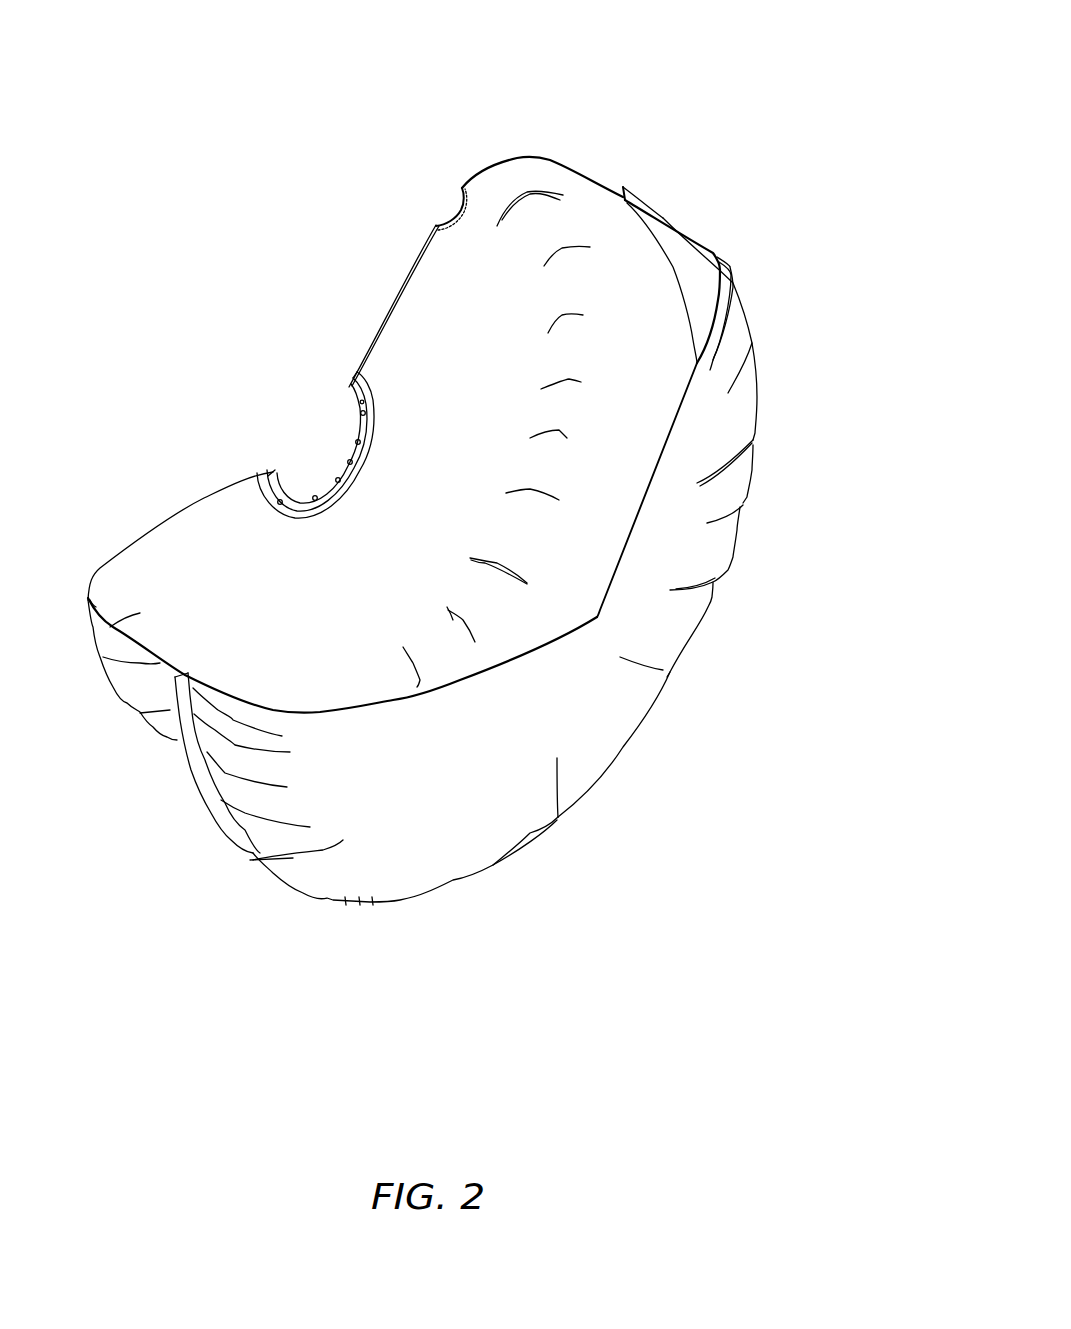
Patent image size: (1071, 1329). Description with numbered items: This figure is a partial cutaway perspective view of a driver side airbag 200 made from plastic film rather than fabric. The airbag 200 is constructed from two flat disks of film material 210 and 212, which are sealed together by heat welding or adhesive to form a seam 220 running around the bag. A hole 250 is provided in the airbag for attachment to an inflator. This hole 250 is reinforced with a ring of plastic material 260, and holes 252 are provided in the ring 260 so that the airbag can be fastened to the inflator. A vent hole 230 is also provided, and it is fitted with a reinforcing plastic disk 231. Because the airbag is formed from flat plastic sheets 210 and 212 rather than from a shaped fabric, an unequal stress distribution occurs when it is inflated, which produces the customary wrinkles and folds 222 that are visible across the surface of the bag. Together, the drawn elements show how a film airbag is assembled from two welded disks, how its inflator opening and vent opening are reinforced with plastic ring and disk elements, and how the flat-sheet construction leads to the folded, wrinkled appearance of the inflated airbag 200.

The driver side airbag 200 is at (648, 737).
The flat disk of film material 210 is at (710, 370).
The flat disk of film material 212 is at (510, 187).
The seam 220 is at (627, 203).
The wrinkles and folds 222 is at (558, 817).
The vent hole 230 is at (445, 203).
The reinforcing plastic disk 231 is at (460, 190).
The hole 250 is at (312, 457).
The holes 252 is at (360, 410).
The ring of plastic material 260 is at (350, 385).